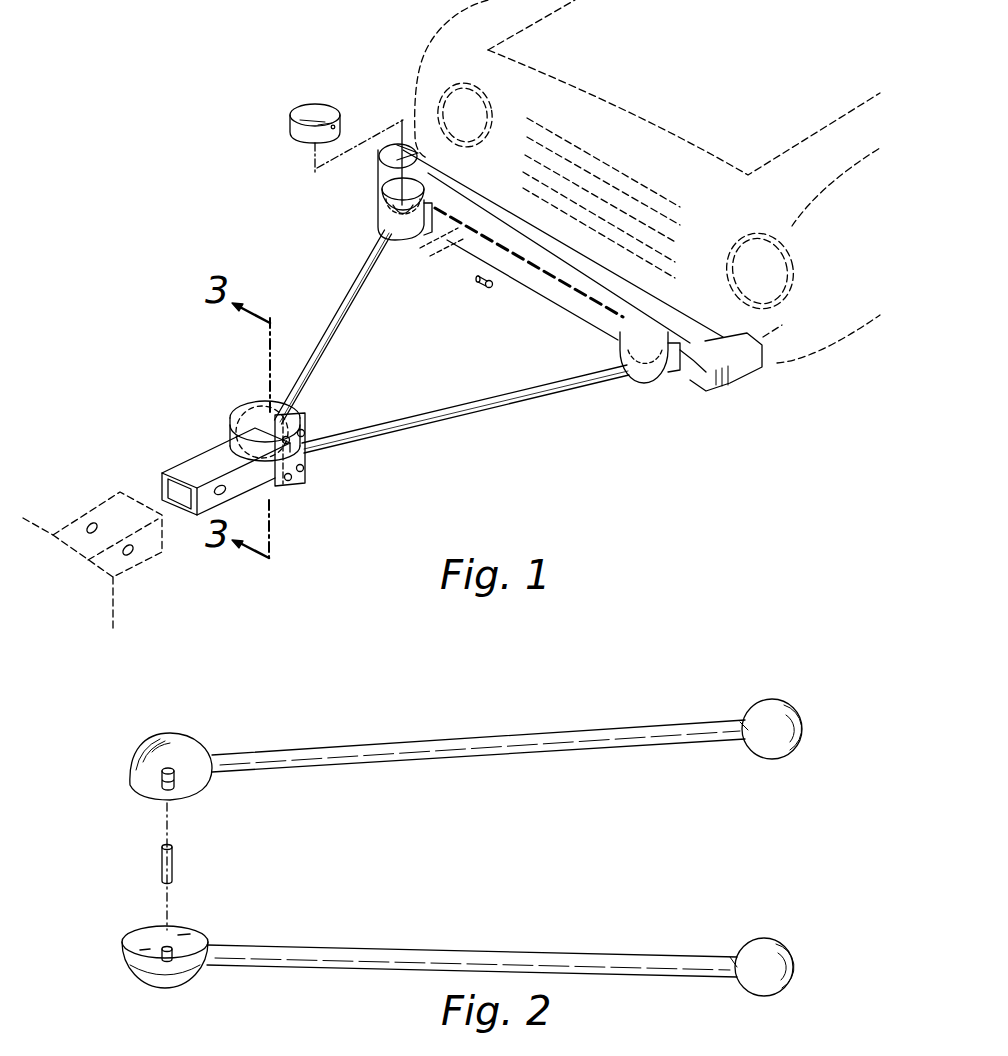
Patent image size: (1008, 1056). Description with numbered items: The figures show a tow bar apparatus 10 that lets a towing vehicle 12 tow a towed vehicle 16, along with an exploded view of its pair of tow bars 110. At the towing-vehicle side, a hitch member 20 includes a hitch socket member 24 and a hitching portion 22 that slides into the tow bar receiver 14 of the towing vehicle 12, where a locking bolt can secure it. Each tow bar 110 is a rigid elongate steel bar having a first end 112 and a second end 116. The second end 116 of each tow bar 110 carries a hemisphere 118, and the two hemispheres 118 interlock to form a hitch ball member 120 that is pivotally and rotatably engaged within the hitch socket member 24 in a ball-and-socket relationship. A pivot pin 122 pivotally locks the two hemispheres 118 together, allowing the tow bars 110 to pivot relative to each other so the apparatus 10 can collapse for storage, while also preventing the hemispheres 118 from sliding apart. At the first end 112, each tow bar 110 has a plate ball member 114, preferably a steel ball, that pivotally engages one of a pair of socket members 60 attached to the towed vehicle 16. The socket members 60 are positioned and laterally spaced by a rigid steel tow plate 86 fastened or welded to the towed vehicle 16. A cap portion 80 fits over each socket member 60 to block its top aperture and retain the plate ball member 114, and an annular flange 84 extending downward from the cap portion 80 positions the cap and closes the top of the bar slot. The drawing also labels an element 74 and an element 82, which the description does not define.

In FIG. 1, the tow bar apparatus 10 is at (529, 447).
In FIG. 1, the towing vehicle 12 is at (113, 617).
In FIG. 1, the tow bar receiver 14 is at (142, 552).
In FIG. 1, the towed vehicle 16 is at (686, 84).
In FIG. 1, the hitch member 20 is at (306, 485).
In FIG. 1, the hitching portion 22 is at (190, 465).
In FIG. 1, the hitch socket member 24 is at (255, 402).
In FIG. 1, the socket members 60 is at (418, 247).
In FIG. 1, the receptacle 74 is at (393, 163).
In FIG. 1, the cap portions 80 is at (290, 128).
In FIG. 1, the pin 82 is at (480, 288).
In FIG. 1, the annular flange 84 is at (303, 148).
In FIG. 1, the tow plate 86 is at (562, 293).
In FIG. 1, the tow bars 110 is at (345, 297).
In FIG. 2, the tow bars 110 is at (482, 738).
In FIG. 2, the first end 112 is at (727, 740).
In FIG. 1, the plate ball member 114 is at (392, 205).
In FIG. 2, the plate ball member 114 is at (783, 700).
In FIG. 2, the second end 116 is at (223, 773).
In FIG. 2, the hemisphere 118 is at (148, 738).
In FIG. 2, the hitch ball member 120 is at (171, 995).
In FIG. 2, the pivot pin 122 is at (160, 863).